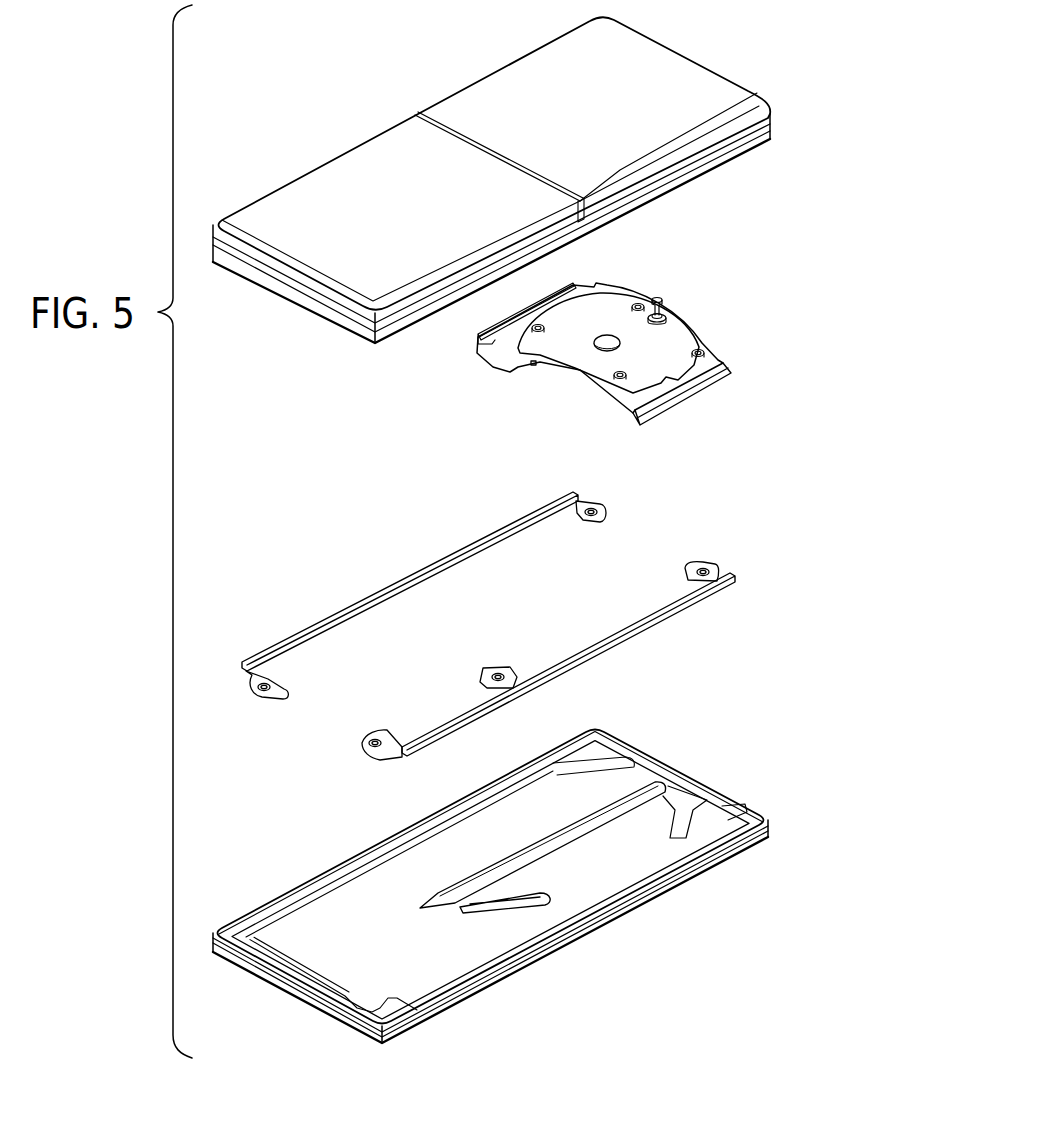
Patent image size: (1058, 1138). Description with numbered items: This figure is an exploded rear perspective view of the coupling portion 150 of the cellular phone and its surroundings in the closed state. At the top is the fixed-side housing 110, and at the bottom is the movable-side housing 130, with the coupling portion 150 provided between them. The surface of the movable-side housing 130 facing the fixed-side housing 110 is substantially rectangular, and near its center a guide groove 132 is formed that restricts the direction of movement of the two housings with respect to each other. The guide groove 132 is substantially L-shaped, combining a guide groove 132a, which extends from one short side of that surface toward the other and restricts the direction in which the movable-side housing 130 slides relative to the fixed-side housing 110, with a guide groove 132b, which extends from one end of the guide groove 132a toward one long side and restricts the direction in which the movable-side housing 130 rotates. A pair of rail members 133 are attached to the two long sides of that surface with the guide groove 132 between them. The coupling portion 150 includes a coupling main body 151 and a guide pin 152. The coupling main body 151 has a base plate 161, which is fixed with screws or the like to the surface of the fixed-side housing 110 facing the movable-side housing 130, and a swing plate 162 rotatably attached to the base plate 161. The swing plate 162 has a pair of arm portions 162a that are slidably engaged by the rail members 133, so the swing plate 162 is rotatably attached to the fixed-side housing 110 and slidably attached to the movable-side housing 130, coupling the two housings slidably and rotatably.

The fixed-side housing 110 is at (760, 113).
The movable-side housing 130 is at (511, 887).
The guide groove 132 is at (595, 897).
The guide groove 132a is at (573, 838).
The guide groove 132b is at (510, 907).
The rail members 133 is at (437, 567).
The coupling portion 150 is at (591, 320).
The coupling main body 151 is at (572, 352).
The guide pin 152 is at (657, 298).
The base plate 161 is at (675, 327).
The swing plate 162 is at (572, 365).
The arm portions 162a is at (478, 341).